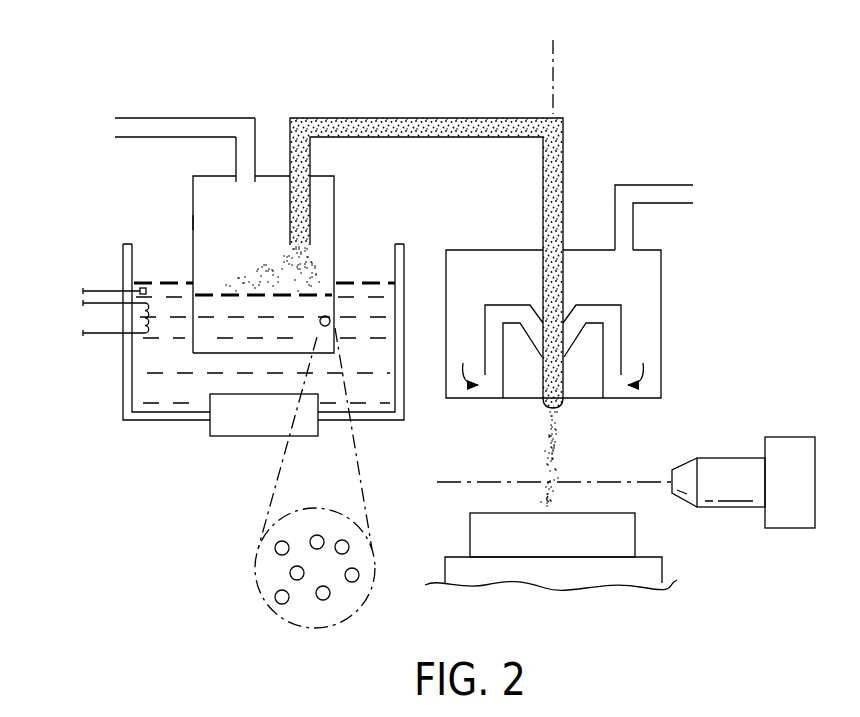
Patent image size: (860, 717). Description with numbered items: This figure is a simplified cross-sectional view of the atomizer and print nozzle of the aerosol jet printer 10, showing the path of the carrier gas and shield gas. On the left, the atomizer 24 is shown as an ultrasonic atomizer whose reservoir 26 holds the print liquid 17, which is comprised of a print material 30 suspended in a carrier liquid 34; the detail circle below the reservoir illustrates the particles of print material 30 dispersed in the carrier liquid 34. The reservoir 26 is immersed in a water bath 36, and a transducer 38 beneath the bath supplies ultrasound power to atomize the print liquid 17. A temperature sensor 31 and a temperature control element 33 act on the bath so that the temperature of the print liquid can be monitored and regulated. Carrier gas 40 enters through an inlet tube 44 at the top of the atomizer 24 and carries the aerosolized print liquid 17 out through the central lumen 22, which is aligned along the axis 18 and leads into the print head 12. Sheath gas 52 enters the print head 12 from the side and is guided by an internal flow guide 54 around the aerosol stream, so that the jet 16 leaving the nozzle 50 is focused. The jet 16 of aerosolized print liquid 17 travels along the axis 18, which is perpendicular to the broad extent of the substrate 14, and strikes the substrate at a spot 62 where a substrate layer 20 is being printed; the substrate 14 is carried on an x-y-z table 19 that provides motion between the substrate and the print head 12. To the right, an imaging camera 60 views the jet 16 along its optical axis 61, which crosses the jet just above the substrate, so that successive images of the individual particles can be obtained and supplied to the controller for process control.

The aerosol jet printer 10 is at (178, 63).
The carrier gas 40 is at (116, 127).
The inlet tube 44 is at (255, 150).
The atomizer 24 is at (173, 188).
The reservoir 26 is at (193, 220).
The temperature sensor 31 is at (147, 287).
The temperature control element 33 is at (145, 317).
The print liquid 17 is at (207, 338).
The water bath 36 is at (138, 383).
The transducer 38 is at (230, 436).
The central lumen 22 is at (543, 182).
The axis 18 is at (556, 77).
The sheath gas 52 is at (702, 193).
The print head 12 is at (667, 316).
The flow guide 54 is at (663, 360).
The nozzle 50 is at (570, 426).
The jet 16 is at (537, 442).
The imaging camera 60 is at (730, 467).
The optical axis 61 is at (613, 482).
The impact spot 62 is at (548, 496).
The substrate 20 is at (510, 513).
The substrate 14 is at (573, 545).
The x-y-z table 19 is at (493, 565).
The print material 30 is at (320, 599).
The carrier liquid 34 is at (344, 607).